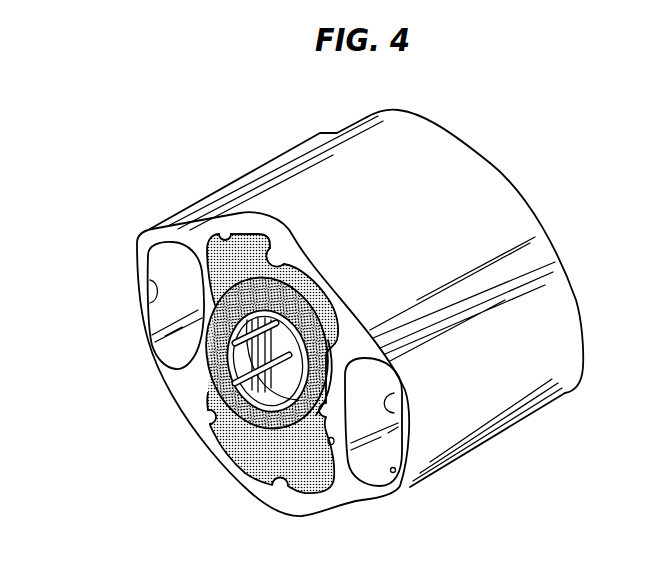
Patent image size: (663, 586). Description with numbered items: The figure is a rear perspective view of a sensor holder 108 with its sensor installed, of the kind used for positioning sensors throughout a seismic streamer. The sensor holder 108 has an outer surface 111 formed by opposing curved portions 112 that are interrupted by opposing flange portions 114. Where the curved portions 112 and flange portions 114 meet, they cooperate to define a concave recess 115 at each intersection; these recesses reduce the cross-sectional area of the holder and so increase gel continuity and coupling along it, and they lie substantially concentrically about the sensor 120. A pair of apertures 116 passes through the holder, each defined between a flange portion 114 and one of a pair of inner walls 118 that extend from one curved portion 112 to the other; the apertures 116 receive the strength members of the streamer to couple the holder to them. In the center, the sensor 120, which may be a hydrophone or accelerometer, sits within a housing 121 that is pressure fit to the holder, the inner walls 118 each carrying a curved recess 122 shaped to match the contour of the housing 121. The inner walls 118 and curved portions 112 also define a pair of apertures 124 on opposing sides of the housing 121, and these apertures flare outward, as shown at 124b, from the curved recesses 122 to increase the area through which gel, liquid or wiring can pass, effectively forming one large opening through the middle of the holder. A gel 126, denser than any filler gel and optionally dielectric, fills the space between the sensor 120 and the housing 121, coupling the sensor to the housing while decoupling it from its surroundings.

The sensor holder 108 is at (279, 149).
The outer surface 111 is at (465, 191).
The curved portions 112 is at (420, 140).
The flange portions 114 is at (525, 394).
The concave recess 115 is at (524, 266).
The apertures 116 is at (152, 300).
The inner walls 118 is at (198, 387).
The sensor 120 is at (250, 406).
The housing 121 is at (302, 272).
The curved recess 122 is at (280, 405).
The apertures 124 is at (276, 252).
The outward flare of apertures 124b is at (224, 230).
The gel 126 is at (222, 343).